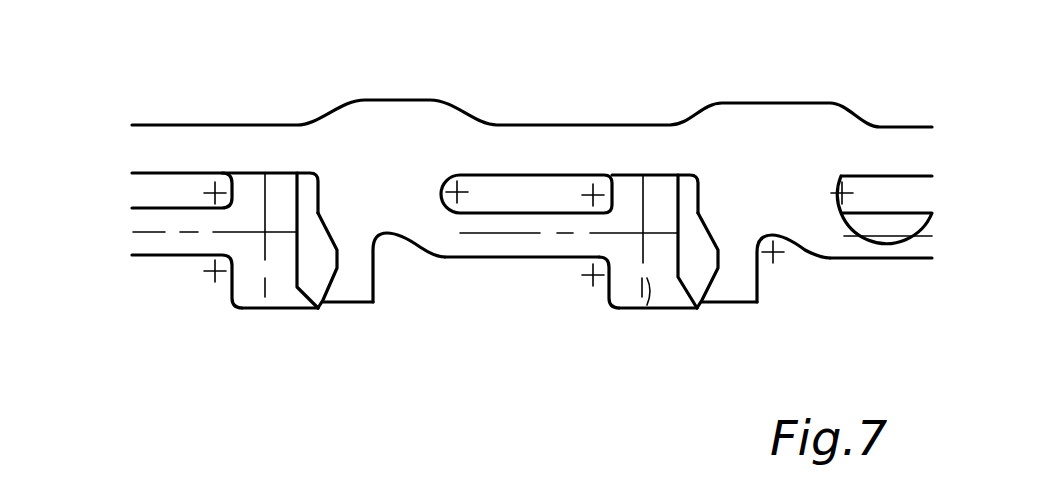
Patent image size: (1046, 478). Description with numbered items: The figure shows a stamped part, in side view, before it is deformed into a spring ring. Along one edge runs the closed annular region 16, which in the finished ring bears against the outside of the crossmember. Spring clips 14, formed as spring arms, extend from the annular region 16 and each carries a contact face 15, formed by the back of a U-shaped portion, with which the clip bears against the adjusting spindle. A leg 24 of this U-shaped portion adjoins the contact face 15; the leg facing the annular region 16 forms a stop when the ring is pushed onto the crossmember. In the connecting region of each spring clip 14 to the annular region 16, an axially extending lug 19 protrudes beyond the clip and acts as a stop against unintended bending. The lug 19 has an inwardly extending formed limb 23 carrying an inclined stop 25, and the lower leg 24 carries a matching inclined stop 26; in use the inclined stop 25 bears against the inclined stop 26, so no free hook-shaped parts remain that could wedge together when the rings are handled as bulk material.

The spring clip 14 is at (453, 240).
The contact face 15 is at (257, 250).
The annular region 16 is at (547, 152).
The lug 19 is at (355, 253).
The limb 23 is at (357, 302).
The leg 24 is at (260, 283).
The inclined stop 25 is at (340, 290).
The inclined stop 26 is at (305, 293).